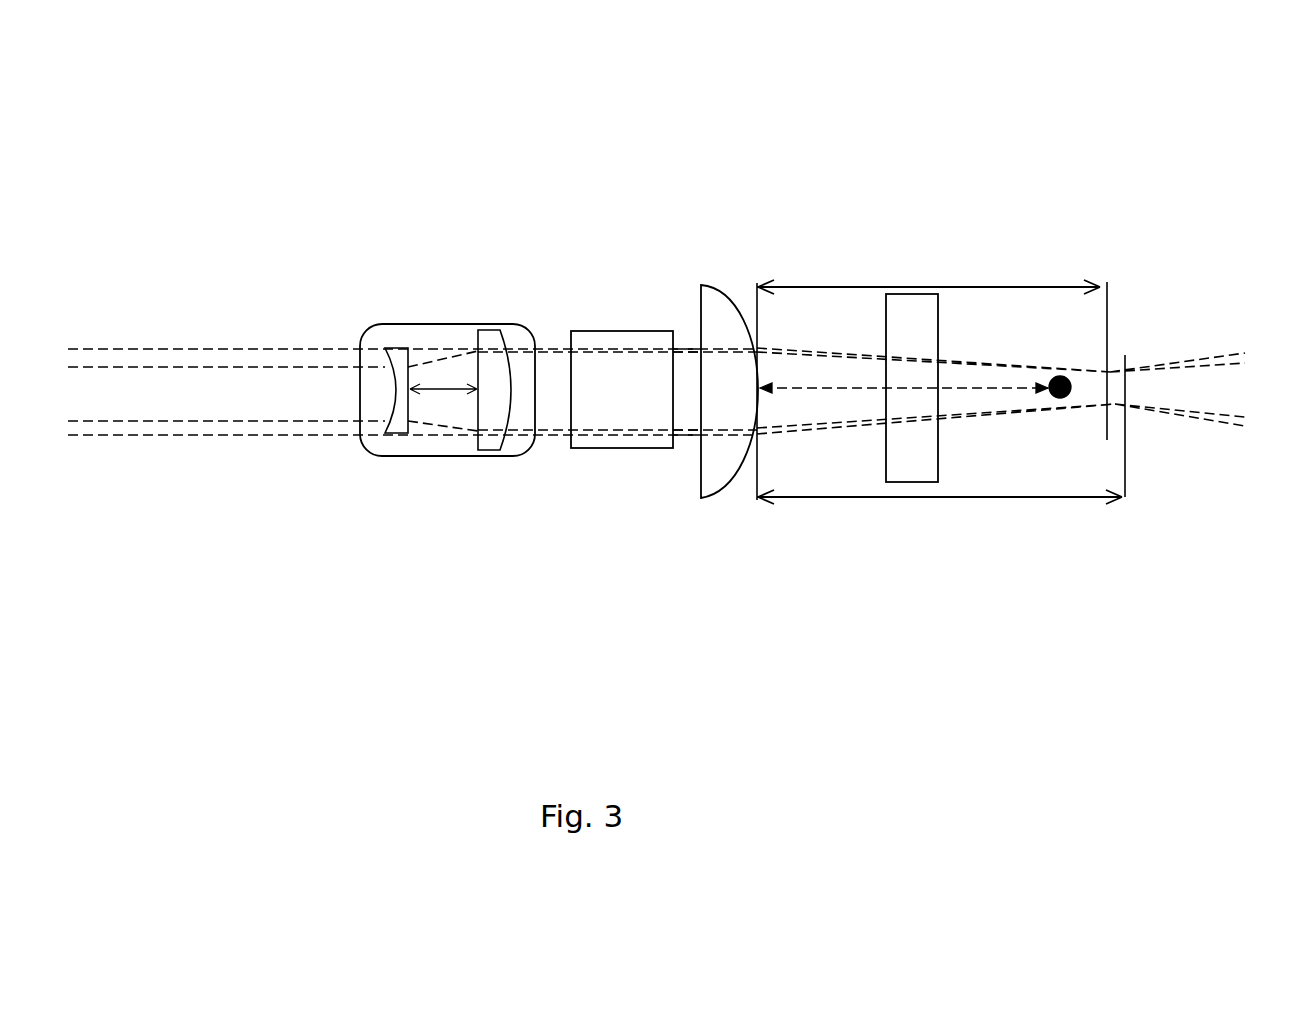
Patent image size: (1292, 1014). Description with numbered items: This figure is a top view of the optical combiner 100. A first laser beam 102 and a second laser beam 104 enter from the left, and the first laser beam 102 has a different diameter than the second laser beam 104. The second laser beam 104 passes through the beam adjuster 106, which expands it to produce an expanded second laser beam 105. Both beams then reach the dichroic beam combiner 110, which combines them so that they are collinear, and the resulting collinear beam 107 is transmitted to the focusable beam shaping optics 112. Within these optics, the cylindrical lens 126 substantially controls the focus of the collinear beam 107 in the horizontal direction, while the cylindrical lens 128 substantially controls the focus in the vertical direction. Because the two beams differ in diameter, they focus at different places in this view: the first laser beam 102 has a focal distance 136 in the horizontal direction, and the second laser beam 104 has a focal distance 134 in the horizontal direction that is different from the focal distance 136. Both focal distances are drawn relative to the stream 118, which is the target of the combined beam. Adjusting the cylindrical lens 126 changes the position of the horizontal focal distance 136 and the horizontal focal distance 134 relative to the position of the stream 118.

The optical combiner 100 is at (974, 729).
The first laser beam 102 is at (198, 450).
The second laser beam 104 is at (328, 438).
The expanded second laser beam 105 is at (551, 335).
The beam adjuster 106 is at (433, 458).
The collinear beam 107 is at (692, 435).
The dichroic beam combiner 110 is at (637, 331).
The focusable beam shaping optics 112 is at (856, 558).
The stream 118 is at (1048, 392).
The cylindrical lens 126 is at (727, 286).
The cylindrical lens 128 is at (917, 294).
The focal distance 134 is at (1028, 502).
The focal distance 136 is at (1022, 287).